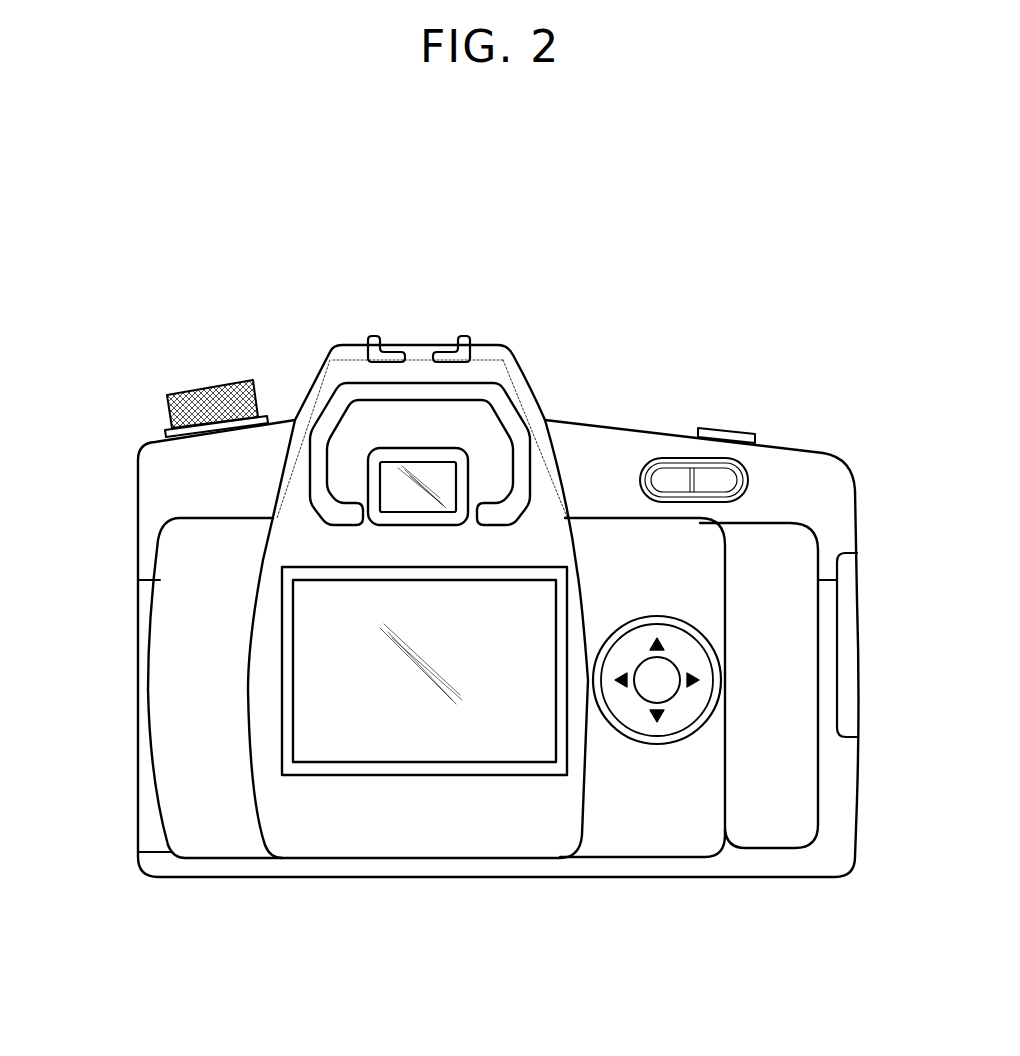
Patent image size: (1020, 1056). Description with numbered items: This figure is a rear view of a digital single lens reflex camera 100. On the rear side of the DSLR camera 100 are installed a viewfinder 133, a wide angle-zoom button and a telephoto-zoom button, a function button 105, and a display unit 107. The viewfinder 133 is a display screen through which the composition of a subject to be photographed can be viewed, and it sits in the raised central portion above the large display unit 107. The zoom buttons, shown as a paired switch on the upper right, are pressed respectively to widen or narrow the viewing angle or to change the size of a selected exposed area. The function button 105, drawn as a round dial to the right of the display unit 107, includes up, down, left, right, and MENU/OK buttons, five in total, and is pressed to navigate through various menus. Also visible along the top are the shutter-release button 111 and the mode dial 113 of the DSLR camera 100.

The digital single lens reflex (DSLR) camera 100 is at (847, 450).
The function button 105 is at (718, 680).
The display unit 107 is at (322, 675).
The shutter-release button 111 is at (729, 428).
The mode dial 113 is at (212, 387).
The viewfinder 133 is at (442, 475).